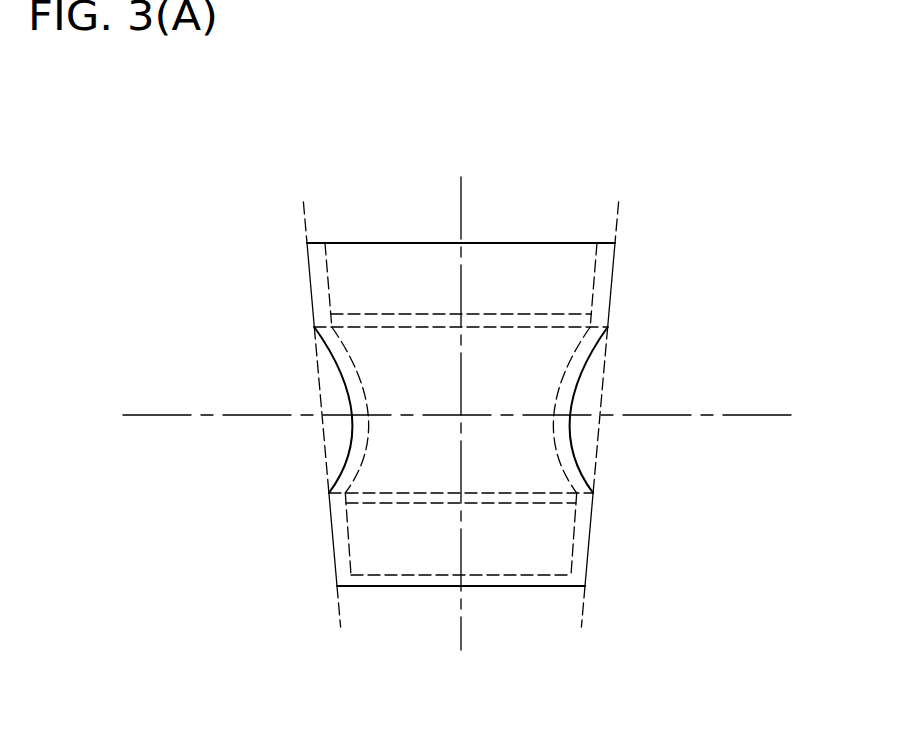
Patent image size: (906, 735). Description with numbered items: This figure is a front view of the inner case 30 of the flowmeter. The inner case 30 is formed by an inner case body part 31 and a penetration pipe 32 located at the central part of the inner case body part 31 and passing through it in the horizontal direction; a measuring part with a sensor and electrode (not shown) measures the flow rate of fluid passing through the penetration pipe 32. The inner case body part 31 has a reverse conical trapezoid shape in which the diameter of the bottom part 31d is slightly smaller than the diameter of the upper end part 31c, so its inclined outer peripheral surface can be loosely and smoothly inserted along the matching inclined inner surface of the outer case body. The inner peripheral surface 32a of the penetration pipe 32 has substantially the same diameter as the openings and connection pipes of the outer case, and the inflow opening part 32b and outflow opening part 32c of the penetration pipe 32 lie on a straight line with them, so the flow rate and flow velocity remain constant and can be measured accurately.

The inner case 30 is at (586, 114).
The inner case body part 31 is at (613, 282).
The upper end part 31c is at (360, 243).
The bottom part 31d is at (523, 586).
The penetration pipe 32 is at (378, 313).
The inner peripheral surface 32a is at (540, 327).
The inflow opening part 32b is at (347, 448).
The outflow opening part 32c is at (573, 440).